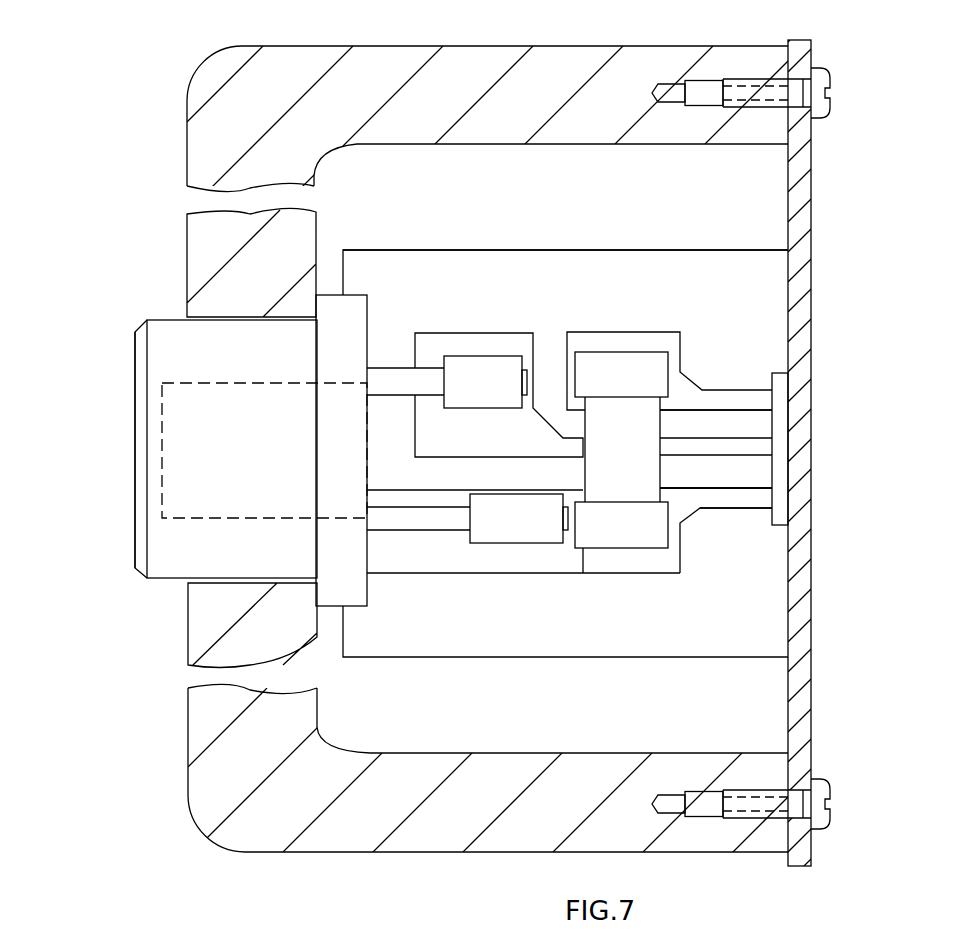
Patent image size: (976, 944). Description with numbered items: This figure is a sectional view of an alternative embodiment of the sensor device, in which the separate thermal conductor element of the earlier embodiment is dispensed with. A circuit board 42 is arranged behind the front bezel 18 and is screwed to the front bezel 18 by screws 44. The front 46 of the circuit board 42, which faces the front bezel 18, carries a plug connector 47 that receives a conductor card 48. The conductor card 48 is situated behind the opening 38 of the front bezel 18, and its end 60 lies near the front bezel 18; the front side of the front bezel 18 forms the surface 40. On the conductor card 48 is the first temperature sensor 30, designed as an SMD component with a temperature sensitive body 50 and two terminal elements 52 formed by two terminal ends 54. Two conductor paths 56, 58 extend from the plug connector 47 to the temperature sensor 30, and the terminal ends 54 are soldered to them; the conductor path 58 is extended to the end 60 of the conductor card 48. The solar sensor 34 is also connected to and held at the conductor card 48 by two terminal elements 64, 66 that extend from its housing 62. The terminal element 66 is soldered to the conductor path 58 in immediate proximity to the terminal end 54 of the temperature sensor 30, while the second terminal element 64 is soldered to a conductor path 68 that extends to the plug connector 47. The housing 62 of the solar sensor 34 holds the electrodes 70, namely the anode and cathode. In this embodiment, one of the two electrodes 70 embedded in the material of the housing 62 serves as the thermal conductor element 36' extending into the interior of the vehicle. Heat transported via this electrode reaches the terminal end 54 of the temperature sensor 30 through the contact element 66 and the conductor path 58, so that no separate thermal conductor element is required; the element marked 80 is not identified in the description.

The front bezel 18 is at (233, 135).
The surface 40 is at (187, 167).
The opening 38 is at (185, 587).
The solar sensor 34 is at (135, 315).
The housing 62 is at (168, 562).
The electrodes 70 is at (252, 383).
The thermal conductor element 36' is at (195, 450).
The end 60 is at (325, 266).
The guide block 80 is at (316, 307).
The front 46 is at (787, 195).
The terminal element 64 is at (403, 380).
The conductor path 68 is at (507, 345).
The terminal element 66 is at (447, 518).
The conductor card 48 is at (638, 288).
The terminal ends 54 is at (612, 368).
The terminal elements 52 is at (677, 342).
The first temperature sensor 30 is at (683, 423).
The conductor path 56 is at (747, 398).
The temperature sensitive body 50 is at (633, 457).
The conductor path 58 is at (707, 498).
The plug connector 47 is at (780, 397).
The circuit board 42 is at (813, 222).
The screws 44 is at (825, 98).